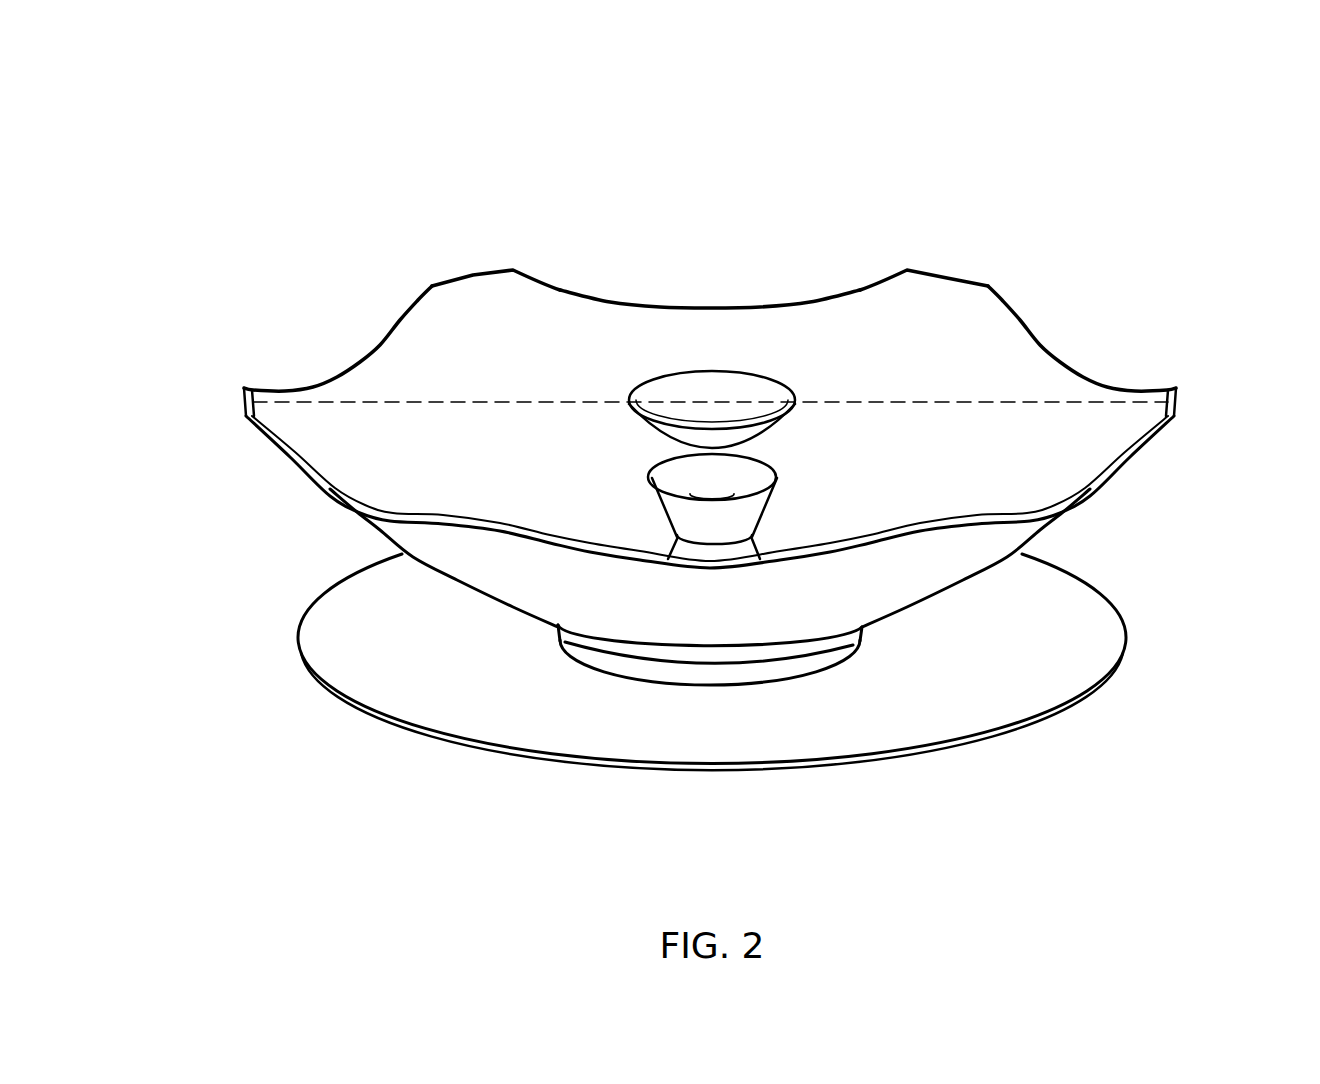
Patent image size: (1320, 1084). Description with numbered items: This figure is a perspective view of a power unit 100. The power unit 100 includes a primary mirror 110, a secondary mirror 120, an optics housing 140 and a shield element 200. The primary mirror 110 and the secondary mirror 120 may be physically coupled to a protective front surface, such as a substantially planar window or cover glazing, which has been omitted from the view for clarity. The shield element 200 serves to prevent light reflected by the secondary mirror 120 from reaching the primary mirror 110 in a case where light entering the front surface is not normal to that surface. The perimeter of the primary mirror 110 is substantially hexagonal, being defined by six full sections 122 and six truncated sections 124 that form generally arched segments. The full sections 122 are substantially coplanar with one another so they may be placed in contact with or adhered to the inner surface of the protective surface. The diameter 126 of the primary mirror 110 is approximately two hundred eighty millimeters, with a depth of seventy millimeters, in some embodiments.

The power unit 100 is at (931, 76).
The primary mirror 110 is at (662, 320).
The secondary mirror 120 is at (750, 435).
The full sections 122 is at (242, 393).
The truncated sections 124 is at (375, 345).
The diameter 126 is at (435, 405).
The optics housing 140 is at (757, 547).
The shield element 200 is at (667, 499).